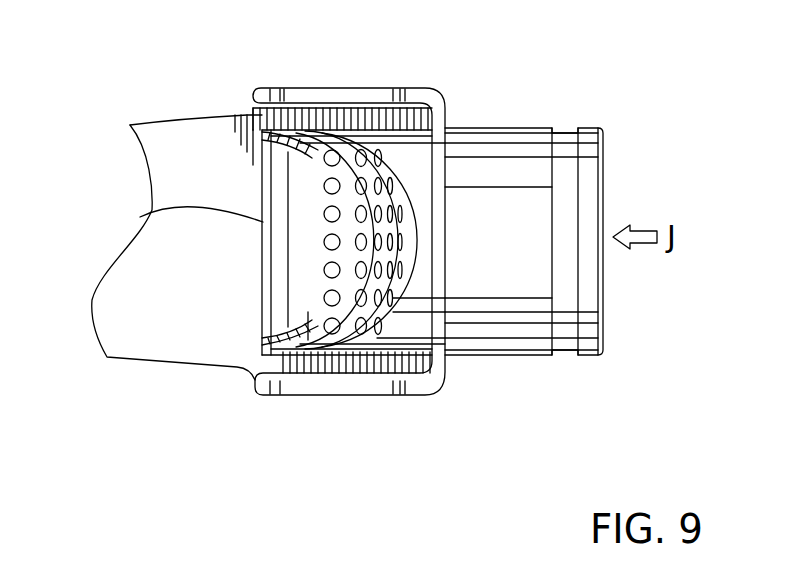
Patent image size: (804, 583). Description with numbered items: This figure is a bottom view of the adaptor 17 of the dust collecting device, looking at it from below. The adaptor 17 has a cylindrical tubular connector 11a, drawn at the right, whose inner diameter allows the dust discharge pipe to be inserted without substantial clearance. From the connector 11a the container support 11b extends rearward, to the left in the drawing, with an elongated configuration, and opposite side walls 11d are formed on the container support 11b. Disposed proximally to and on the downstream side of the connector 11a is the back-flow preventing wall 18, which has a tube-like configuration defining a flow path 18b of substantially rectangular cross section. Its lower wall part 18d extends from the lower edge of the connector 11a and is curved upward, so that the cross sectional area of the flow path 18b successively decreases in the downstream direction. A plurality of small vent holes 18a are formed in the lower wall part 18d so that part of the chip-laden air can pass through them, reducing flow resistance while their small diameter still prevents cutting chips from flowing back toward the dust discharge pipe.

The adaptor 17 is at (487, 115).
The back-flow preventing wall 18 is at (348, 253).
The vent holes 18a is at (378, 157).
The flow path 18b is at (137, 219).
The lower wall part 18d is at (310, 340).
The connector 11a is at (500, 308).
The container support 11b is at (192, 263).
The side walls 11d is at (292, 100).